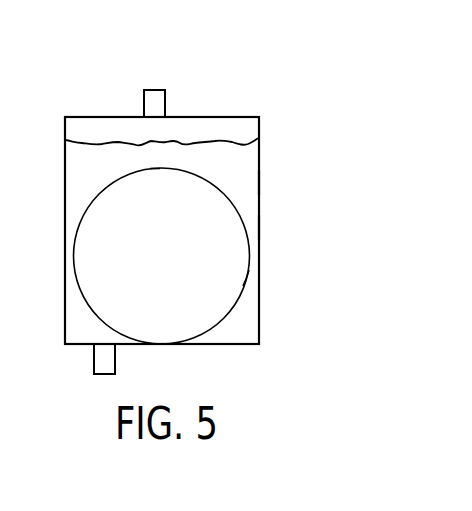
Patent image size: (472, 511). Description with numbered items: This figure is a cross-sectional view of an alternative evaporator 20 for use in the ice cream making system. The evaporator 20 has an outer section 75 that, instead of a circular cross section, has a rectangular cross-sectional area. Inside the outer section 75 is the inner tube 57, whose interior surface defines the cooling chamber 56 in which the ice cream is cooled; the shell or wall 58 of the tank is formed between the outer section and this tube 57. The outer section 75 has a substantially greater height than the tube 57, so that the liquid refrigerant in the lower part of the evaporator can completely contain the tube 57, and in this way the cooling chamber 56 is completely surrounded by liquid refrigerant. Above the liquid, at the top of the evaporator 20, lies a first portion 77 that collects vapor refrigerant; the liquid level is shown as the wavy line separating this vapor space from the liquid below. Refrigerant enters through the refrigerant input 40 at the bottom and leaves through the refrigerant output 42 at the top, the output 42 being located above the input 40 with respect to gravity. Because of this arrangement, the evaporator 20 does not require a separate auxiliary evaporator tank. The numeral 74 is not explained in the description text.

The evaporator 20 is at (286, 160).
The refrigerant input 40 is at (93, 358).
The refrigerant output 42 is at (165, 95).
The cooling chamber 56 is at (176, 269).
The inner tube 57 is at (243, 286).
The wall 58 is at (155, 168).
The container wall 74 is at (266, 229).
The outer section 75 is at (259, 180).
The first portion 77 is at (273, 135).